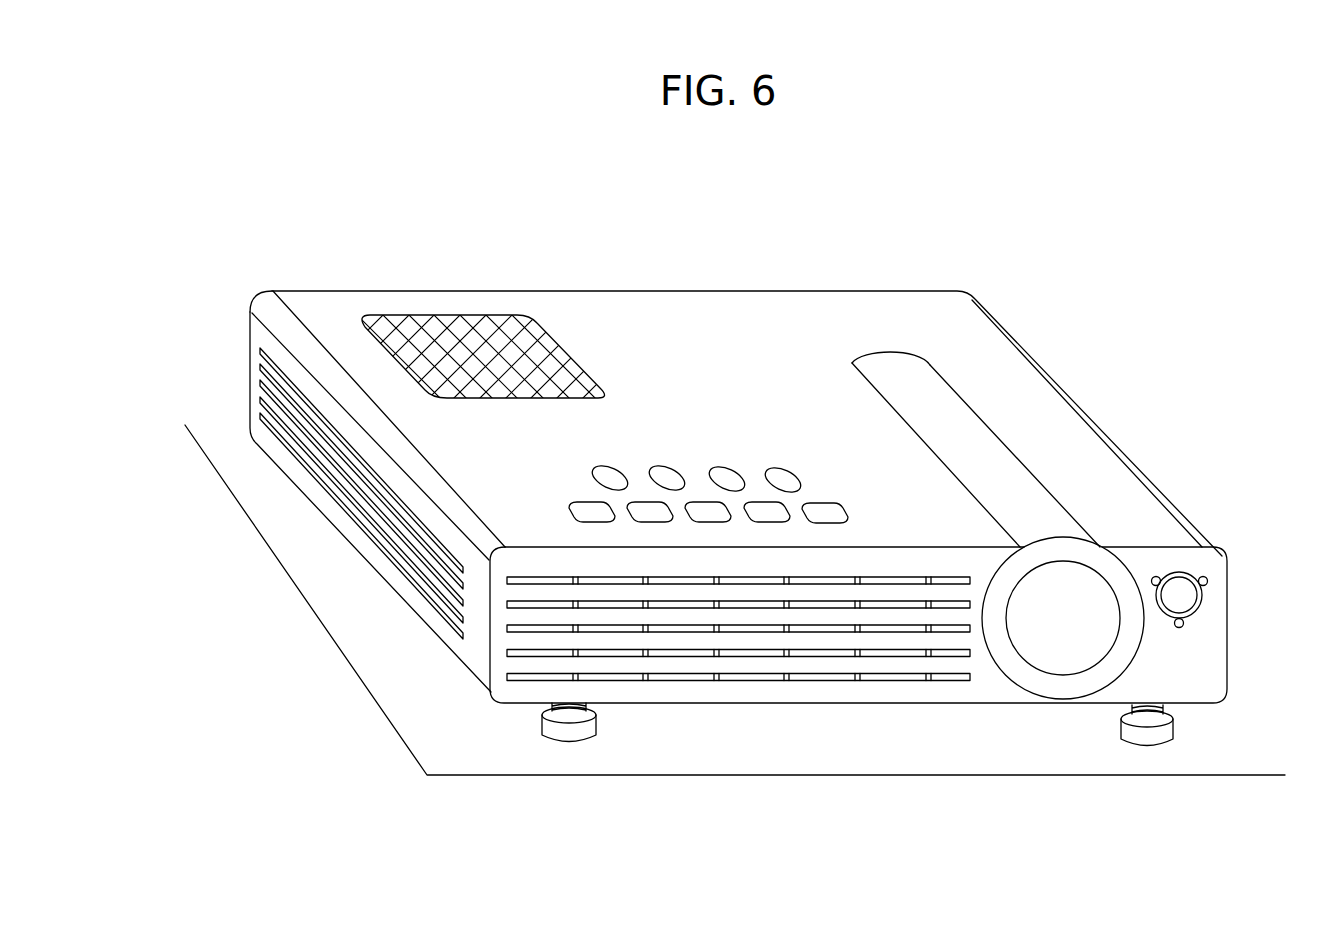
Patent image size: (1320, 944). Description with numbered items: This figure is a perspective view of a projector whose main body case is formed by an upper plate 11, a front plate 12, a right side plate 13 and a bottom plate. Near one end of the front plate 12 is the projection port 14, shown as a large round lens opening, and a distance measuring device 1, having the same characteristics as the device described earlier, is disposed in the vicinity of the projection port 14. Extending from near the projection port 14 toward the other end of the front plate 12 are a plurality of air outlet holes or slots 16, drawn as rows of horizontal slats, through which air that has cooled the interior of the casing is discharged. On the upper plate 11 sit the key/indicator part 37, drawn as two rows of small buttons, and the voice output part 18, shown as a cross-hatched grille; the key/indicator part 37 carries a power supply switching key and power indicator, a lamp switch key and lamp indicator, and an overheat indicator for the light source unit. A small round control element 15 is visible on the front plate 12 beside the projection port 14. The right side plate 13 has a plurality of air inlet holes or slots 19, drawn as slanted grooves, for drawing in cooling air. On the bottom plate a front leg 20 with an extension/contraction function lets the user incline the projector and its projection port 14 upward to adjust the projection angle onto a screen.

The distance measuring device 1 is at (325, 250).
The upper plate 11 is at (727, 350).
The front plate 12 is at (855, 693).
The right side plate 13 is at (367, 545).
The projection port 14 is at (1065, 658).
The operation button 15 is at (1183, 595).
The exhaust port slats 16 is at (700, 678).
The voice output part 18 is at (468, 333).
The air inlet holes or slots 19 is at (288, 437).
The front leg 20 is at (572, 738).
The key/indicator part 37 is at (691, 452).